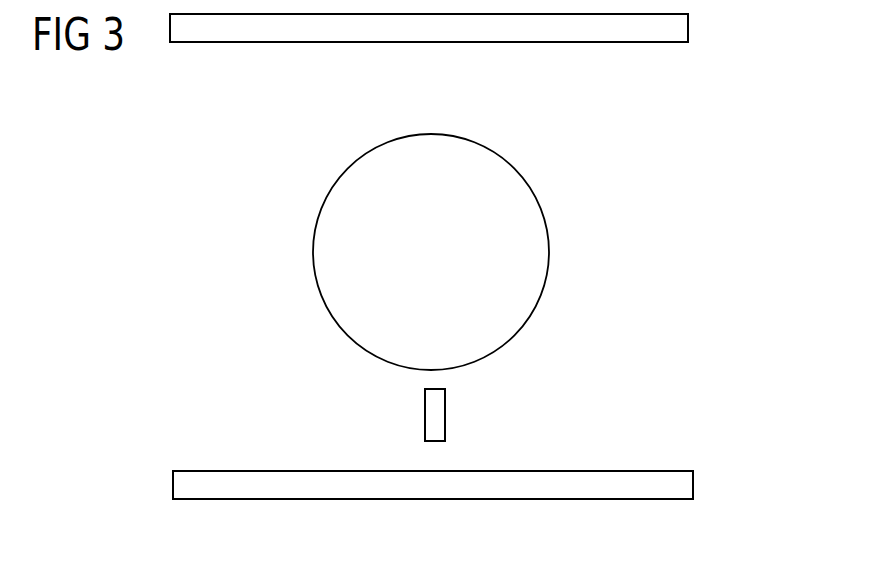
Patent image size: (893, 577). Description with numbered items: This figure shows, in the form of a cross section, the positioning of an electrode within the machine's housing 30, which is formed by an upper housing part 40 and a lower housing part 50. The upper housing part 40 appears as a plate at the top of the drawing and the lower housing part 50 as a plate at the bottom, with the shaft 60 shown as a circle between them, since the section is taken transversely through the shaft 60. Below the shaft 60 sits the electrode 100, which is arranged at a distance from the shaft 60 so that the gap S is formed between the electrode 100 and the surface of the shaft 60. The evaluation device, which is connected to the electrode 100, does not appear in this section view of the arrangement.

The upper housing part 40 is at (670, 27).
The housing 30 is at (538, 43).
The shaft 60 is at (525, 255).
The gap S is at (435, 378).
The electrode 100 is at (446, 415).
The lower housing part 50 is at (677, 481).